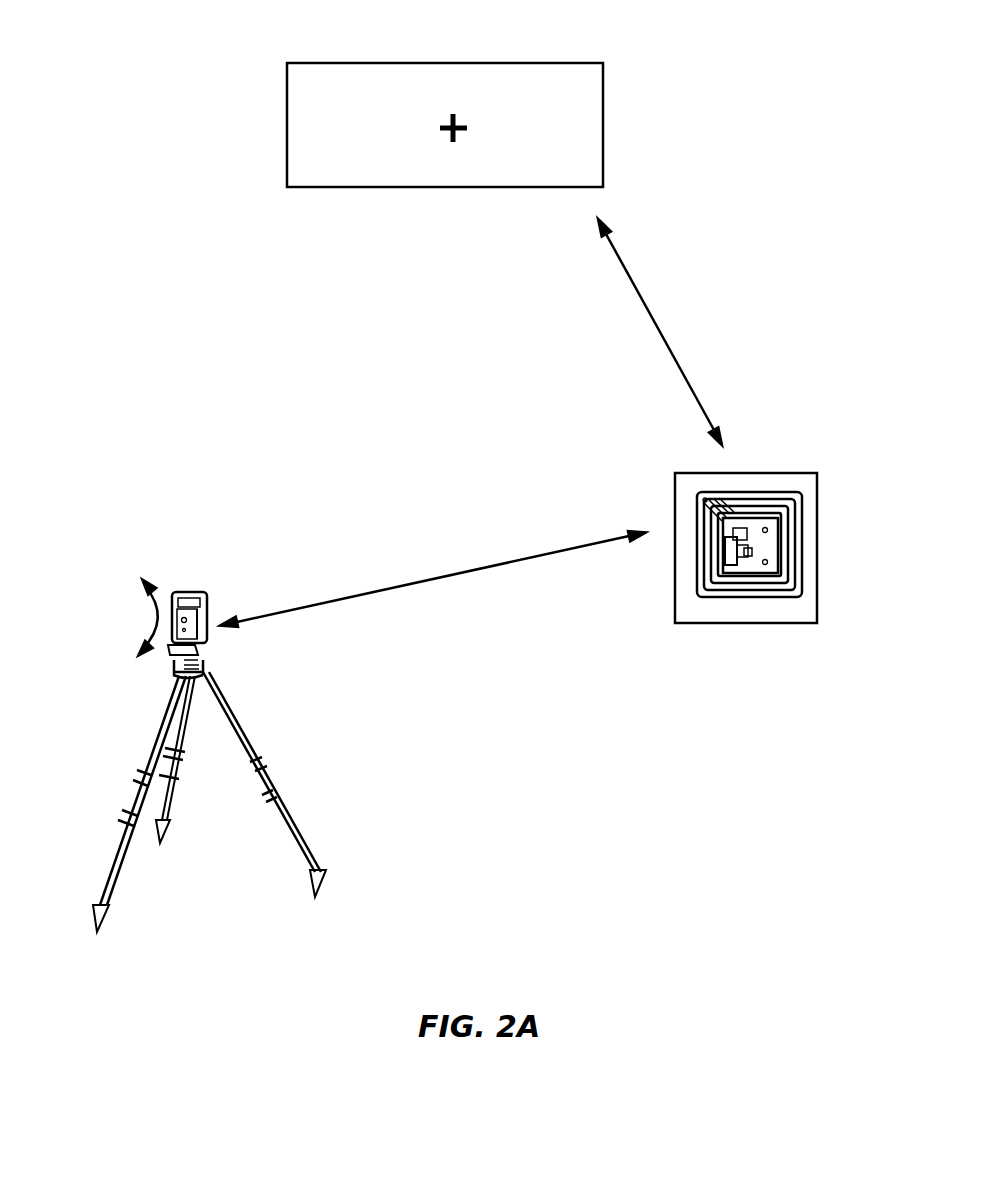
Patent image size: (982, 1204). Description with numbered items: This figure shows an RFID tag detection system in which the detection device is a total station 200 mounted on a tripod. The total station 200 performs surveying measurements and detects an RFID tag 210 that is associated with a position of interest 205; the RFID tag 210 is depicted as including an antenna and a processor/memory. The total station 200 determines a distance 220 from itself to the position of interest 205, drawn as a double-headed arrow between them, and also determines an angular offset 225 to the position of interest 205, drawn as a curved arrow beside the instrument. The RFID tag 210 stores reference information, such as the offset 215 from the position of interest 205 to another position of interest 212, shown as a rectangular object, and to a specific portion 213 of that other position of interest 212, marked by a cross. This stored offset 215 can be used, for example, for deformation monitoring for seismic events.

The total station 200 is at (182, 592).
The position of interest 205 is at (778, 473).
The RFID tag 210 is at (780, 547).
The other position of interest 212 is at (498, 63).
The specific portion 213 is at (453, 172).
The offset 215 is at (653, 317).
The distance 220 is at (430, 578).
The angular offset 225 is at (162, 612).